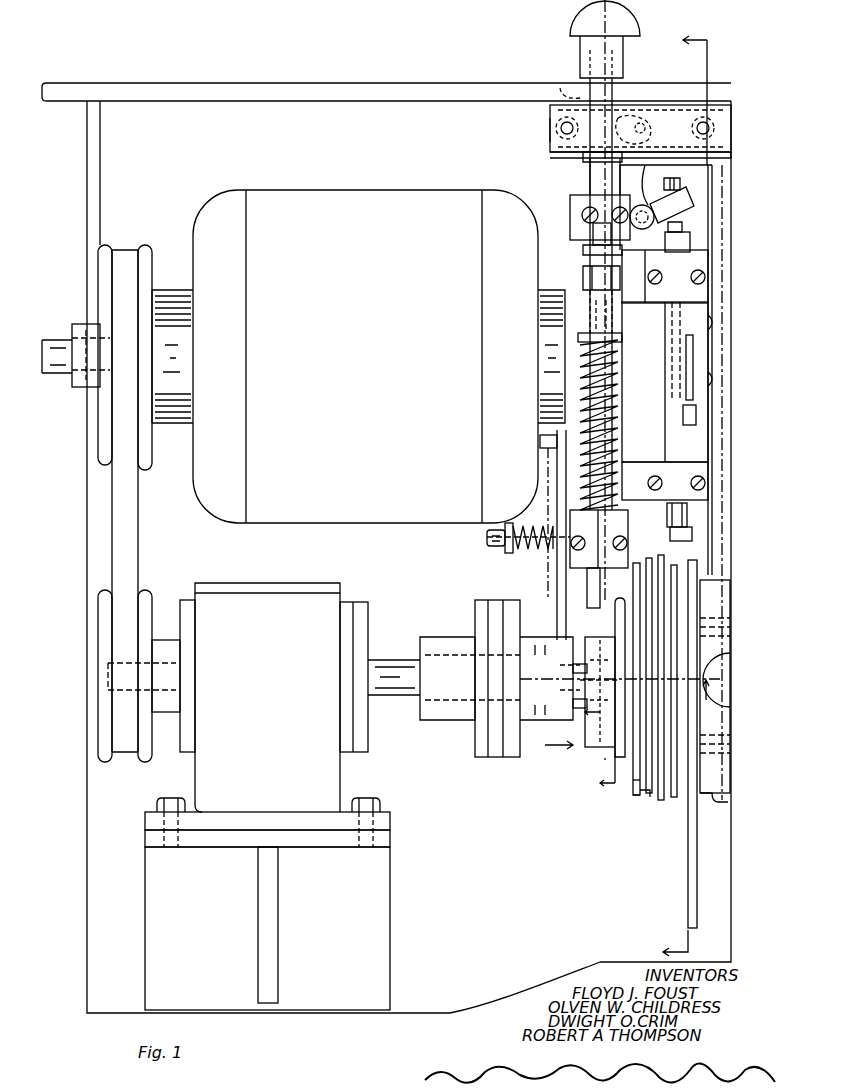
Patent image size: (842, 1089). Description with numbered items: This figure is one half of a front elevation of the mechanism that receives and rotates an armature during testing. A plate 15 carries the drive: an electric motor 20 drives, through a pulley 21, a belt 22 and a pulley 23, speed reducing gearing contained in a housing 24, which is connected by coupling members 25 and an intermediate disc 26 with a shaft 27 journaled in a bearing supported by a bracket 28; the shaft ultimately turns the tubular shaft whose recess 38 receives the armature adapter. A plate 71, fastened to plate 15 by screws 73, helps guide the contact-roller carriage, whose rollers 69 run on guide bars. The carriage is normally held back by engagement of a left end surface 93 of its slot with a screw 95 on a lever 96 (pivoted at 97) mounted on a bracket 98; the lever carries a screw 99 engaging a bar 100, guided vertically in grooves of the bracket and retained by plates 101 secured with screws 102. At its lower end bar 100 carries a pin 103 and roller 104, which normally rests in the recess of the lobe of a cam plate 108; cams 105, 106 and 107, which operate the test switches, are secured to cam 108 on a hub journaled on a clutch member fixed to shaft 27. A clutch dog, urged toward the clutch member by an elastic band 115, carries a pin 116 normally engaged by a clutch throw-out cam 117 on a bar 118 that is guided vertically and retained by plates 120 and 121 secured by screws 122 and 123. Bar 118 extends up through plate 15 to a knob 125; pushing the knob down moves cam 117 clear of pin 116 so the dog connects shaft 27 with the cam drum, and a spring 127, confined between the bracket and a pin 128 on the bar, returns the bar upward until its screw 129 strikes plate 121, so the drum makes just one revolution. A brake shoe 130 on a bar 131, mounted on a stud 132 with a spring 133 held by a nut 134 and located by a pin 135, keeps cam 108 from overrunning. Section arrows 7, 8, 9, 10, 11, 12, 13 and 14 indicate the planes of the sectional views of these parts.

The section line 7- 7 is at (677, 495).
The plate 8 is at (636, 800).
The plate 9 is at (649, 798).
The plate 10 is at (661, 803).
The arrow / direction 11 is at (597, 770).
The arrow / direction 12 is at (610, 642).
The clutch opening / support 13 is at (626, 686).
The clutch member 14 is at (590, 646).
The plate 15 is at (336, 86).
The electric motor 20 is at (380, 193).
The pulley 21 is at (152, 249).
The belt 22 is at (136, 536).
The pulley 23 is at (100, 672).
The housing 24 is at (302, 584).
The coupling members 25 is at (480, 759).
The intermediate disc 26 is at (496, 760).
The shaft 27 is at (545, 640).
The bracket 28 is at (727, 800).
The recess 38 is at (708, 404).
The rollers 69 is at (552, 153).
The plate 71 is at (688, 108).
The screws 73 is at (562, 92).
The left end surface 93 is at (600, 118).
The screw 95 is at (668, 118).
The lever 96 is at (646, 180).
The pivot 97 is at (640, 230).
The bracket 98 is at (700, 200).
The screw 99 is at (680, 180).
The bar 100 is at (690, 238).
The plates 101 is at (705, 272).
The screws 102 is at (692, 478).
The pin 103 is at (694, 515).
The roller 104 is at (694, 541).
The cam 105 is at (640, 780).
The cam 106 is at (628, 800).
The cam 107 is at (648, 792).
The cam plate 108 is at (678, 744).
The elastic band 115 is at (600, 756).
The pin 116 is at (573, 671).
The clutch throw-out cam 117 is at (573, 700).
The bar 118 is at (590, 176).
The plate 120 is at (580, 588).
The plate 121 is at (575, 232).
The screws 122 is at (599, 539).
The screws 123 is at (590, 210).
The knob 125 is at (570, 18).
The spring 127 is at (612, 416).
The pin 128 is at (618, 338).
The screw 129 is at (583, 277).
The brake shoe 130 is at (595, 718).
The bar 131 is at (557, 573).
The stud 132 is at (487, 542).
The spring 133 is at (528, 527).
The nut 134 is at (507, 555).
The pin 135 is at (545, 450).